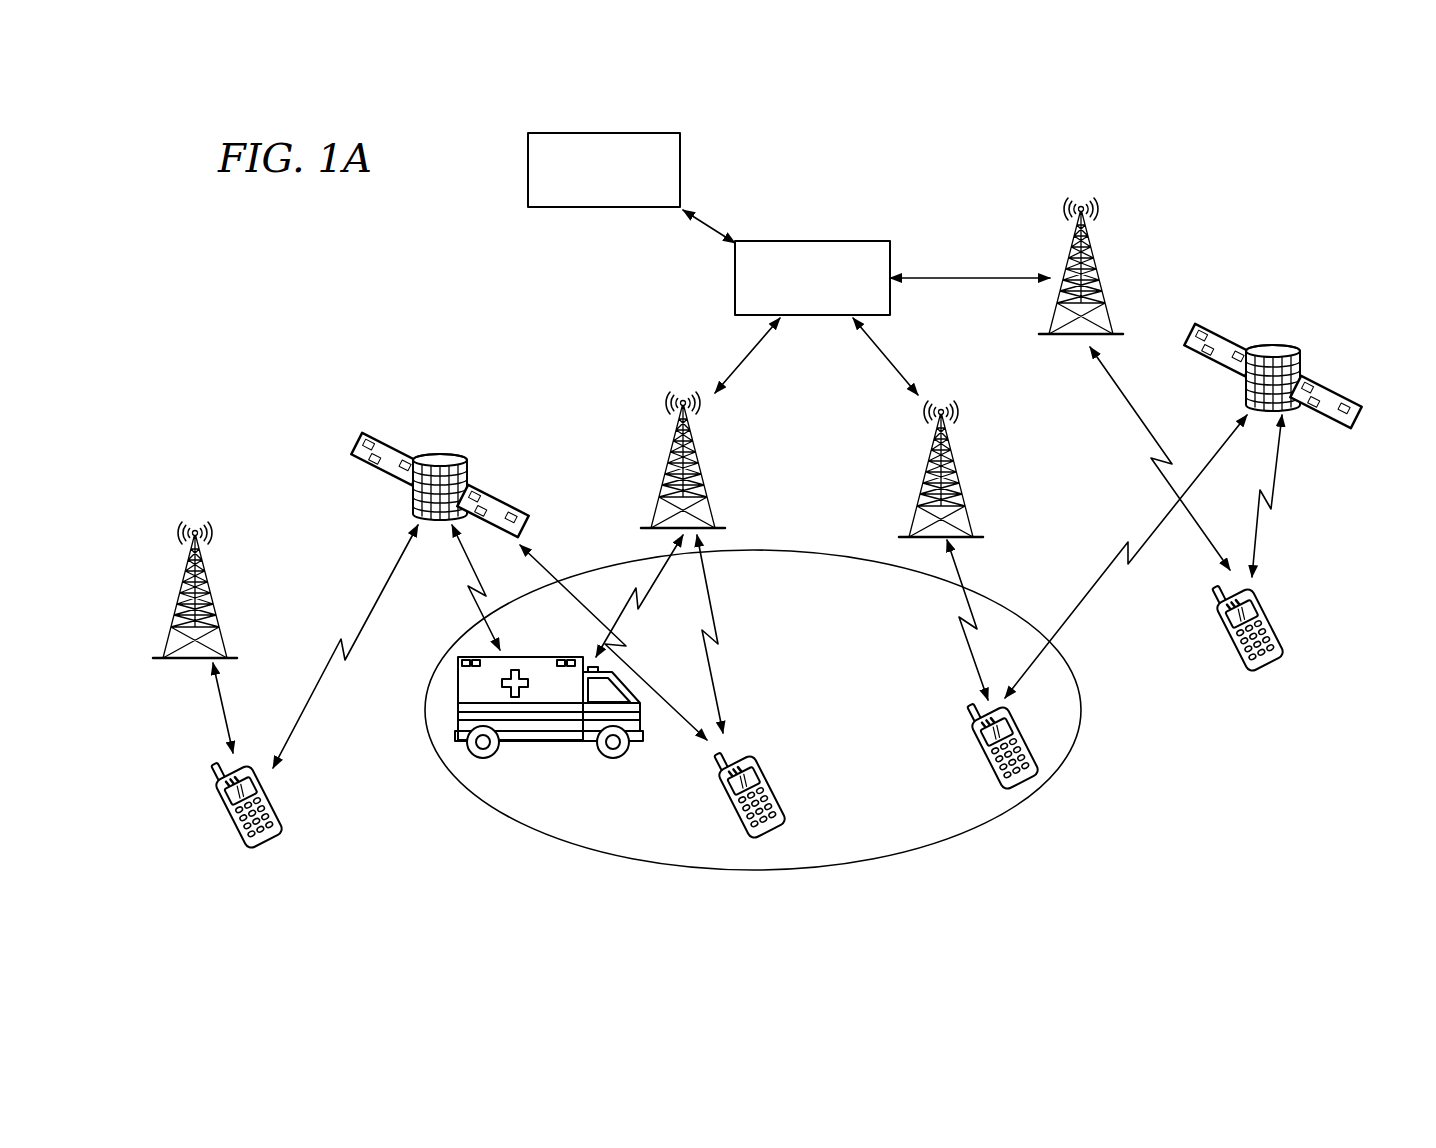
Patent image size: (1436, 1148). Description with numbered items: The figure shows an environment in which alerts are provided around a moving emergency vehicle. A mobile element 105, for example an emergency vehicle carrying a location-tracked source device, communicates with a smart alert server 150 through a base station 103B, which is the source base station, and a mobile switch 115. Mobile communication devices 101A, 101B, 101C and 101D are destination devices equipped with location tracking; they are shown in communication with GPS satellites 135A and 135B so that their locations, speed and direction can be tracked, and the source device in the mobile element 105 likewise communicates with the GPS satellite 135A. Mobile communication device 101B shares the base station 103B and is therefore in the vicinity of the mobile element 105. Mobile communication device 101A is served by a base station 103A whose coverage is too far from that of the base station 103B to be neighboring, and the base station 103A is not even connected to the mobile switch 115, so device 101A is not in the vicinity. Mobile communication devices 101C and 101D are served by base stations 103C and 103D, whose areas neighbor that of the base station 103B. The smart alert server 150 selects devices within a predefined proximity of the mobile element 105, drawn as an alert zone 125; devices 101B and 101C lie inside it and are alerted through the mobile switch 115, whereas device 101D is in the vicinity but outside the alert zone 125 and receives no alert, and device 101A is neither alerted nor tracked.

The mobile communication device 101A is at (290, 822).
The mobile communication device 101B is at (790, 795).
The mobile communication device 101C is at (968, 728).
The mobile communication device 101D is at (1285, 628).
The base station 103A is at (193, 522).
The base station 103B is at (683, 395).
The base station 103C is at (944, 402).
The base station 103D is at (1080, 200).
The mobile element 105 is at (540, 745).
The mobile switch 115 is at (822, 240).
The alert zone 125 is at (812, 552).
The GPS satellite 135A is at (445, 462).
The GPS satellite 135B is at (1276, 345).
The smart alert server 150 is at (527, 166).